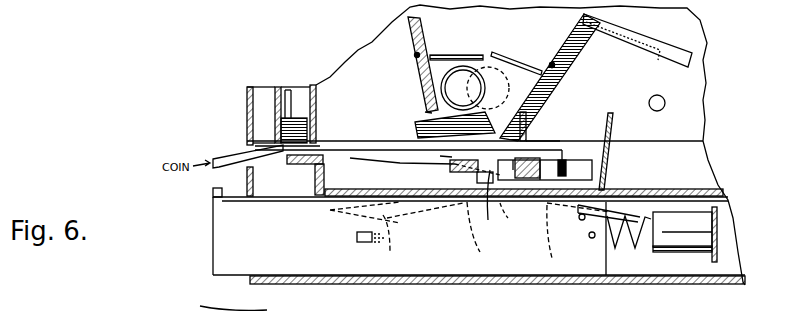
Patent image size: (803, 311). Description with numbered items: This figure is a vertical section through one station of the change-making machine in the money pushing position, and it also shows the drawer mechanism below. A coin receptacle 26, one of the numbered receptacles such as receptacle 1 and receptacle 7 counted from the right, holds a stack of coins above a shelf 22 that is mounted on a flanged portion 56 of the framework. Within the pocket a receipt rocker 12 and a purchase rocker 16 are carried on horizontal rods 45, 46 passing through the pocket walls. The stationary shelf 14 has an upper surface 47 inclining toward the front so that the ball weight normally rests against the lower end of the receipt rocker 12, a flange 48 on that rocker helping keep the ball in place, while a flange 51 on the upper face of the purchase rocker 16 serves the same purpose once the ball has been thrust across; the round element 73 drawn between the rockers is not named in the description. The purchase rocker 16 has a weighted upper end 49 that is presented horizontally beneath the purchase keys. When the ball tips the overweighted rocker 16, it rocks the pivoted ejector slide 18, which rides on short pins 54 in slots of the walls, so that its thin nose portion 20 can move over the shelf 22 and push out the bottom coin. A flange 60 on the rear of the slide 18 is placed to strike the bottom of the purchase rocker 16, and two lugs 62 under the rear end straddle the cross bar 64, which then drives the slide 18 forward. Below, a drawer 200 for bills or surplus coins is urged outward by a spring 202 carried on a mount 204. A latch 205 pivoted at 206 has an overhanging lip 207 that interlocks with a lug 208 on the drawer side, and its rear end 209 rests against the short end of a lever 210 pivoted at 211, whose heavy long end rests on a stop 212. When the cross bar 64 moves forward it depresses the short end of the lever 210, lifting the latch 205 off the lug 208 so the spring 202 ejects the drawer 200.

The coin receptacle 1 is at (657, 103).
The coin receptacle 7 is at (143, 160).
The receipt rocker 12 is at (395, 17).
The stationary shelf 14 is at (455, 125).
The purchase rocker 16 is at (533, 90).
The pivoted ejector slide 18 is at (373, 163).
The nose portion 20 is at (338, 143).
The shelf 22 is at (222, 299).
The coin receptacle 26 is at (296, 92).
The horizontal rod 45 is at (415, 56).
The horizontal rod 46 is at (557, 67).
The upper surface of shelf 47 is at (426, 115).
The flange 48 is at (463, 55).
The upper end of purchase rocker 49 is at (663, 50).
The flange 51 is at (503, 57).
The pins 54 is at (437, 153).
The flanged portion 56 is at (300, 165).
The flange 60 is at (536, 125).
The lugs 62 is at (573, 158).
The cross bar 64 is at (592, 176).
The coin 73 is at (475, 88).
The drawer 200 is at (220, 263).
The spring 202 is at (628, 245).
The mount 204 is at (688, 252).
The latch 205 is at (396, 217).
The pivot 206 is at (491, 235).
The overhanging lip 207 is at (406, 241).
The lug 208 is at (357, 236).
The rear end of latch 209 is at (522, 218).
The lever 210 is at (456, 179).
The pivot 211 is at (565, 237).
The stop 212 is at (593, 226).